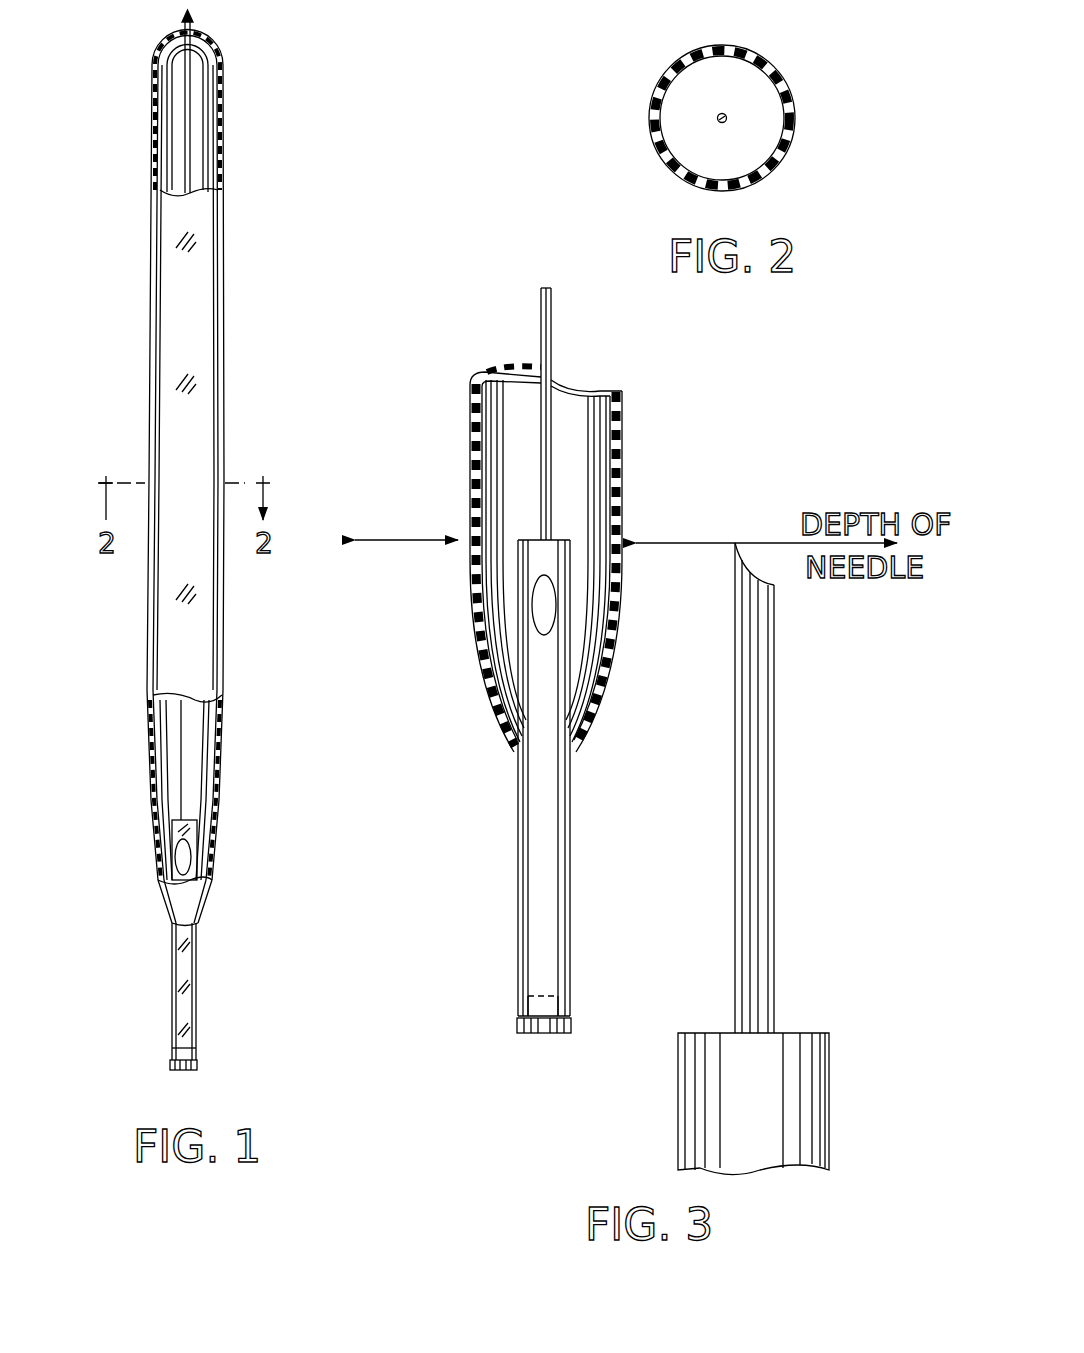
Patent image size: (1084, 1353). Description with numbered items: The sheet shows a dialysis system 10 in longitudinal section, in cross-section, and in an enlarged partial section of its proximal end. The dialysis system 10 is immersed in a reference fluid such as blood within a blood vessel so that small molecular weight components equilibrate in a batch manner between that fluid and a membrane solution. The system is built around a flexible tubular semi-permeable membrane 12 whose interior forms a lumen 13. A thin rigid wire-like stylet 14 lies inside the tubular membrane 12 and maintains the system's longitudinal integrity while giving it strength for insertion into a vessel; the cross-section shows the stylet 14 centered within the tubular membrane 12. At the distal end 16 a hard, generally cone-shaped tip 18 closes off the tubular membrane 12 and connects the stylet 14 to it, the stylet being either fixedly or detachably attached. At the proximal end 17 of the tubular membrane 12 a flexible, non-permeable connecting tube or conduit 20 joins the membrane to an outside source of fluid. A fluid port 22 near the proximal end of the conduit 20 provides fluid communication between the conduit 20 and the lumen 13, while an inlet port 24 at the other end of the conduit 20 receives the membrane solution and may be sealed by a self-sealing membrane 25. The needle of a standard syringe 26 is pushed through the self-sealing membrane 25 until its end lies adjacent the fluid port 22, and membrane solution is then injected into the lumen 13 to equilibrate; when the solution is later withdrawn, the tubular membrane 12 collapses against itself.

In FIG. 1, the dialysis system 10 is at (204, 544).
In FIG. 1, the tubular semi-permeable membrane 12 is at (148, 277).
In FIG. 2, the tubular semi-permeable membrane 12 is at (797, 130).
In FIG. 3, the tubular semi-permeable membrane 12 is at (470, 530).
In FIG. 1, the lumen 13 is at (175, 740).
In FIG. 3, the lumen 13 is at (513, 440).
In FIG. 1, the stylet 14 is at (183, 150).
In FIG. 2, the stylet 14 is at (719, 114).
In FIG. 3, the stylet 14 is at (541, 352).
In FIG. 1, the distal end 16 is at (210, 30).
In FIG. 1, the proximal end 17 is at (232, 803).
In FIG. 3, the proximal end 17 is at (478, 690).
In FIG. 1, the tip 18 is at (183, 18).
In FIG. 1, the connecting tube or conduit 20 is at (172, 975).
In FIG. 3, the connecting tube or conduit 20 is at (518, 832).
In FIG. 1, the fluid port 22 is at (182, 855).
In FIG. 3, the fluid port 22 is at (545, 610).
In FIG. 1, the inlet port 24 is at (172, 1055).
In FIG. 3, the inlet port 24 is at (518, 1016).
In FIG. 1, the self-sealing membrane 25 is at (185, 1070).
In FIG. 3, the self-sealing membrane 25 is at (546, 1035).
In FIG. 3, the syringe 26 is at (830, 1063).